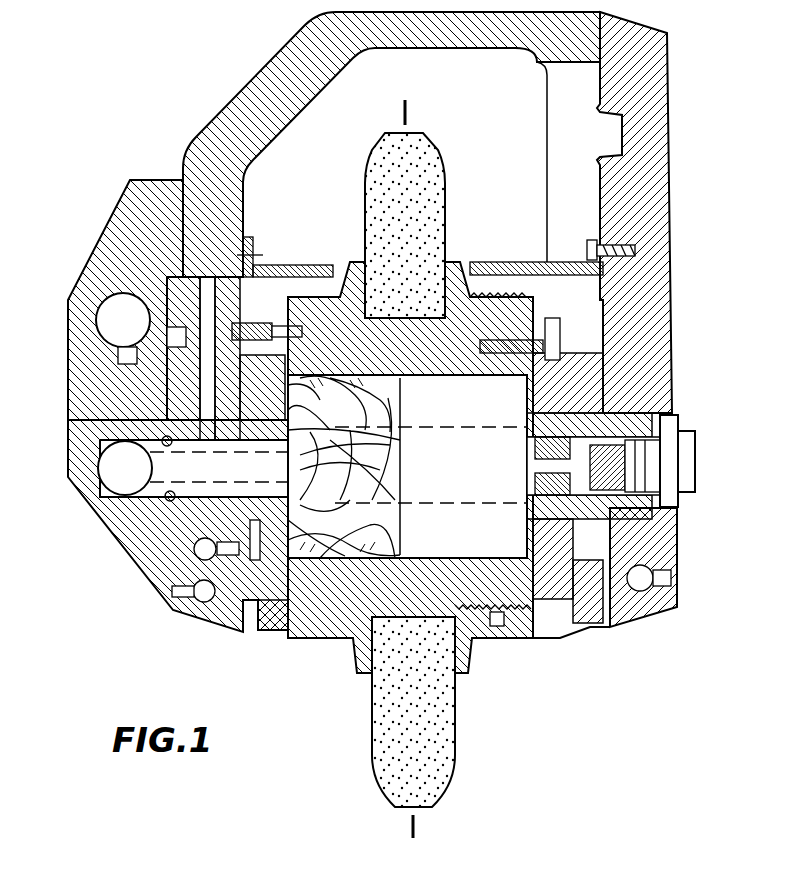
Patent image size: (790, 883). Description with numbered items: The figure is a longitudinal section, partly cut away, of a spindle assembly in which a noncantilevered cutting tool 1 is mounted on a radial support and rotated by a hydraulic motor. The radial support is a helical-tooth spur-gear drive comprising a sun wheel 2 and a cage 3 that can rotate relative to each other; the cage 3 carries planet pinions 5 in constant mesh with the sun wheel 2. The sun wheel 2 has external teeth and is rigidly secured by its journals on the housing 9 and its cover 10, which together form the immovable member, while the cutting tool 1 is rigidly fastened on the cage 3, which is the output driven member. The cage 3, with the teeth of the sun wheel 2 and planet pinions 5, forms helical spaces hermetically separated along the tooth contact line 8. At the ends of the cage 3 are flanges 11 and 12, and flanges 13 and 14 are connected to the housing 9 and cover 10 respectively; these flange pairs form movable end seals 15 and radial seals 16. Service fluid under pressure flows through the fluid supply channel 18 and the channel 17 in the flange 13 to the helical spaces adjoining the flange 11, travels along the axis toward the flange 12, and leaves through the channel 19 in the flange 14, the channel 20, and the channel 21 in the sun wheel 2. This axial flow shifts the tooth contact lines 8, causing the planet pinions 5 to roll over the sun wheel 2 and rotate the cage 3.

The cutting tool 1 is at (378, 710).
The sun wheel 2 is at (368, 443).
The cage 3 is at (337, 622).
The planet pinions 5 is at (370, 403).
The tooth contact line 8 is at (362, 420).
The housing 9 is at (197, 160).
The cover 10 is at (663, 188).
The flange 11 is at (280, 625).
The flange 12 is at (540, 396).
The flange 13 is at (82, 438).
The flange 14 is at (643, 413).
The end seals 15 is at (176, 338).
The radial seals 16 is at (270, 416).
The channel 17 is at (197, 407).
The fluid supply channel 18 is at (112, 305).
The channel 19 is at (593, 452).
The channel 20 is at (122, 477).
The channel 21 is at (553, 467).